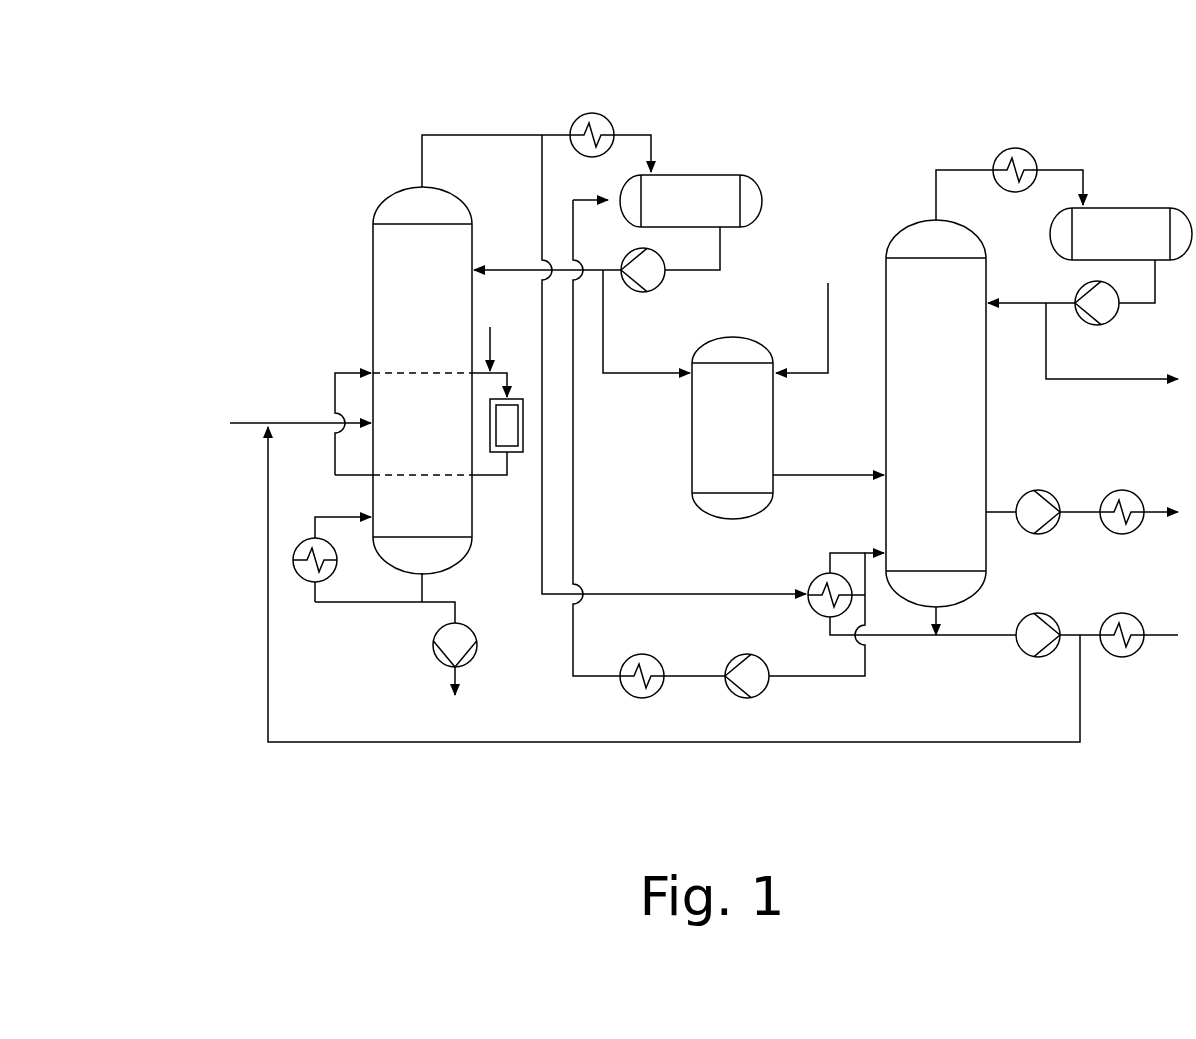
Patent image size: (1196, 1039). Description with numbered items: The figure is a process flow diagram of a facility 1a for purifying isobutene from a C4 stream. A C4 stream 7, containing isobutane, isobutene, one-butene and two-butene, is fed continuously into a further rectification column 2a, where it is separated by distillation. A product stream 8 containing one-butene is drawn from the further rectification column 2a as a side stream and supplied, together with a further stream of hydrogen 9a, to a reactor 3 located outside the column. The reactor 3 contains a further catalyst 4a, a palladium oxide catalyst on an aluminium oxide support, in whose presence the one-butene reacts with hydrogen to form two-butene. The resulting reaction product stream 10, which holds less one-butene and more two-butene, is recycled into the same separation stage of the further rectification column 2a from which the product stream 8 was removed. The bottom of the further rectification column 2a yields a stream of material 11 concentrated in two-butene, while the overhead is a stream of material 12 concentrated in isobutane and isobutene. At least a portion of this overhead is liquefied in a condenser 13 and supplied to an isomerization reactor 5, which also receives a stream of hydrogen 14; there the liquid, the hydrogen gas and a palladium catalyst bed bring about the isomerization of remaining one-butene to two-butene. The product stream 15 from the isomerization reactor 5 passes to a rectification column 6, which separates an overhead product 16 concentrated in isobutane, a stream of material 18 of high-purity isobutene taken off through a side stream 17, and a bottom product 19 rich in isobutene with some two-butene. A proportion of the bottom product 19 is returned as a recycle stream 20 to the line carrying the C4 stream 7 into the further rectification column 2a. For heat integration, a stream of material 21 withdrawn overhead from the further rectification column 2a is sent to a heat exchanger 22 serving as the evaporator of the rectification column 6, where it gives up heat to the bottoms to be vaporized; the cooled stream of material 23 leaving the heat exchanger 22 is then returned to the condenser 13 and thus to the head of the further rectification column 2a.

The facility 1a is at (276, 118).
The further rectification column 2a is at (398, 278).
The reactor 3 is at (512, 452).
The further catalyst 4a is at (506, 432).
The isomerization reactor 5 is at (715, 433).
The rectification column 6 is at (960, 378).
The C4 stream 7 is at (247, 425).
The product stream 8 is at (500, 372).
The further stream of hydrogen 9a is at (497, 333).
The reaction product stream 10 is at (335, 388).
The stream of material concentrated in 2-butene 11 is at (432, 603).
The stream of material concentrated in isobutane and isobutene 12 is at (604, 308).
The condenser 13 is at (683, 190).
The stream of hydrogen 14 is at (827, 322).
The product stream 15 is at (810, 472).
The overhead product 16 is at (1126, 388).
The side stream 17 is at (1002, 508).
The stream of material concentrated in isobutene 18 is at (1153, 508).
The bottom product 19 is at (995, 648).
The recycle stream 20 is at (641, 745).
The stream of material 21 is at (542, 578).
The heat exchanger 22 is at (815, 582).
The stream of material 23 is at (576, 557).